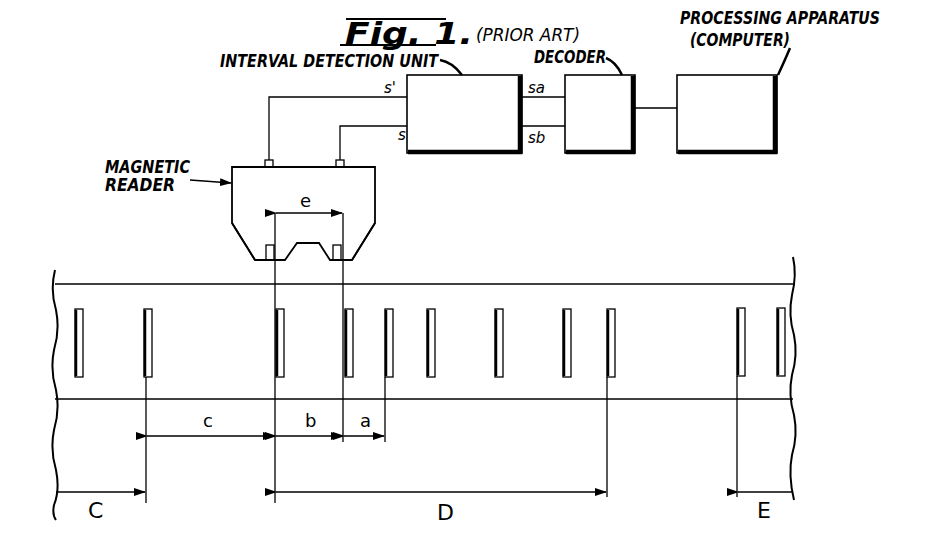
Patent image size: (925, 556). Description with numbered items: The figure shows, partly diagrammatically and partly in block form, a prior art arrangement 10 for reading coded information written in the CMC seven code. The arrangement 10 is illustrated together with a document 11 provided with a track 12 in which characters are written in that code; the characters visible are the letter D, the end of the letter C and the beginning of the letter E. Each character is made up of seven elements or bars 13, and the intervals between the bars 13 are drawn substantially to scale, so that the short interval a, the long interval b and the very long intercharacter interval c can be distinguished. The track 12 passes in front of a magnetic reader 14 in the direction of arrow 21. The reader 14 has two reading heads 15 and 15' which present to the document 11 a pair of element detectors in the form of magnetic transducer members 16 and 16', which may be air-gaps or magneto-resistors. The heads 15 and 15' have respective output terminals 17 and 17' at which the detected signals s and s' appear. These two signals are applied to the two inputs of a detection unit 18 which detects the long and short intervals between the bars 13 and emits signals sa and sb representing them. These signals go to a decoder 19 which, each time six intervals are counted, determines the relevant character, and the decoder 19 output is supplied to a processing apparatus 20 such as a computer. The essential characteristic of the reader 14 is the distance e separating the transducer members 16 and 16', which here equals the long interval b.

The prior art arrangement 10 is at (482, 198).
The document 11 is at (795, 272).
The track 12 is at (668, 400).
The bars 13 is at (433, 345).
The magnetic reader 14 is at (378, 210).
The reading head 15 is at (385, 241).
The reading head 15' is at (222, 237).
The magnetic transducer member 16 is at (365, 261).
The magnetic transducer member 16' is at (239, 260).
The output terminal 17 is at (371, 146).
The output terminal 17' is at (314, 132).
The detection unit 18 is at (464, 114).
The decoder 19 is at (600, 114).
The processing apparatus 20 is at (727, 114).
The arrow 21 is at (92, 262).